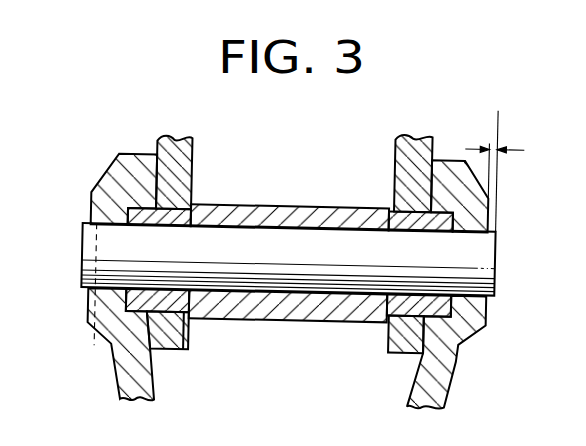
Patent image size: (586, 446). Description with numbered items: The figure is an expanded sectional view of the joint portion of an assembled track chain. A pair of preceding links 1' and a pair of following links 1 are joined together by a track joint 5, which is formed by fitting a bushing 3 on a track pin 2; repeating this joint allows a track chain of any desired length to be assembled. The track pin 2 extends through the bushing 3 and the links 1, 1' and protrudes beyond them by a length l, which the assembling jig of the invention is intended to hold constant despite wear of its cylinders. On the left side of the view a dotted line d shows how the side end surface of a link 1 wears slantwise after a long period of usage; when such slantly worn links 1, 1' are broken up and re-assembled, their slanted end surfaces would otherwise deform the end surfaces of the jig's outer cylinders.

The following links 1 is at (286, 349).
The preceding links 1' is at (290, 172).
The track pin 2 is at (306, 238).
The bushing 3 is at (237, 300).
The track joint 5 is at (269, 198).
The dotted line d is at (96, 241).
The length of the protrudent portion l is at (495, 160).